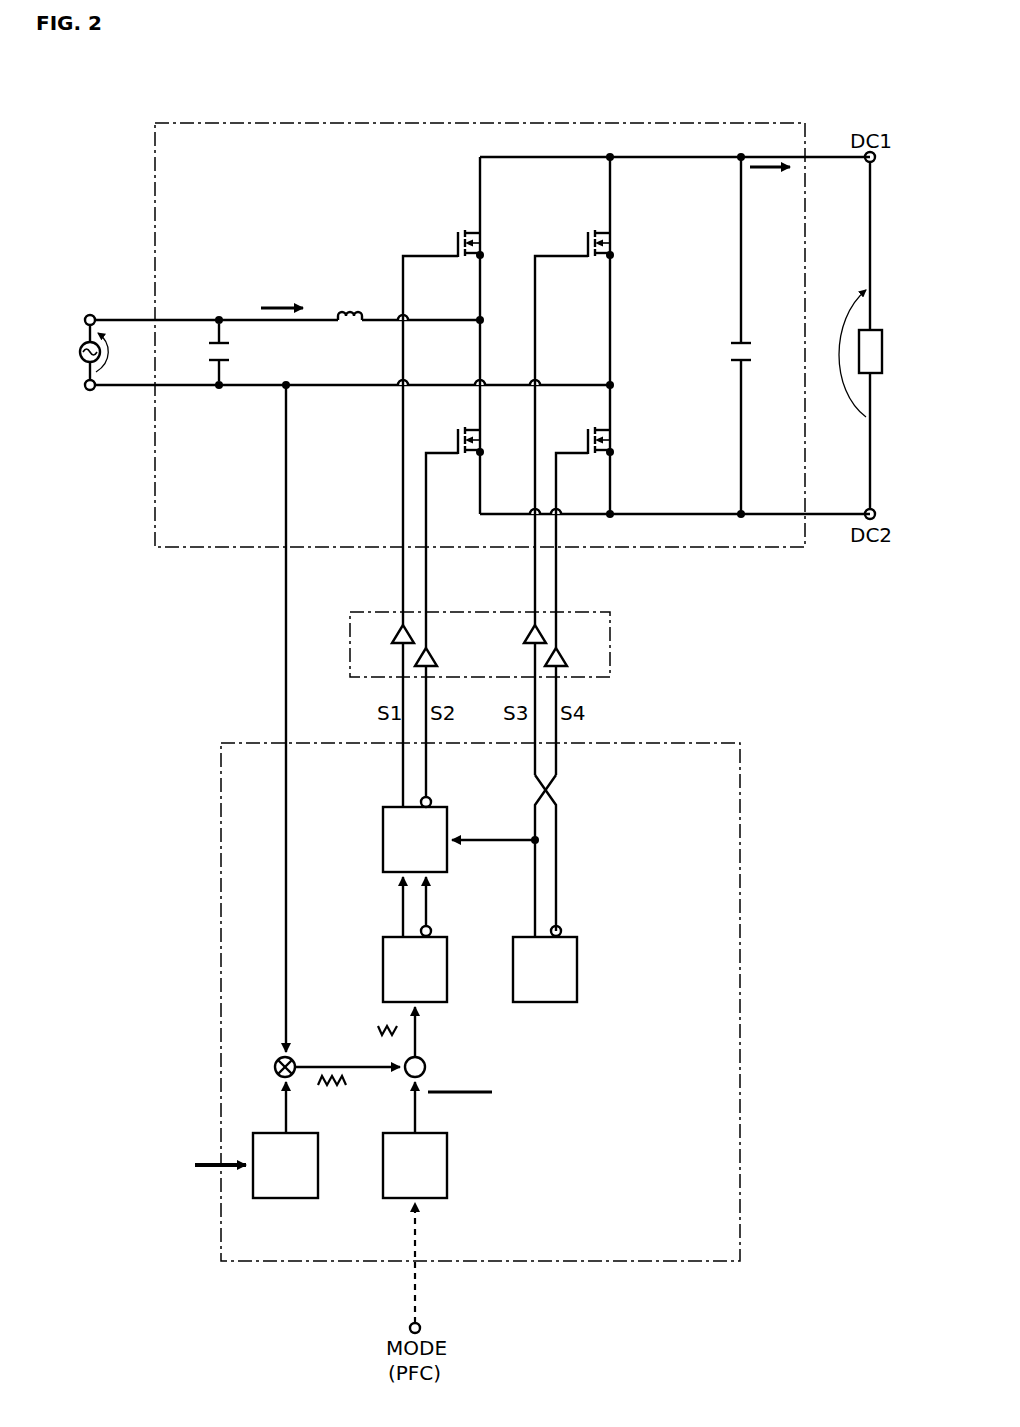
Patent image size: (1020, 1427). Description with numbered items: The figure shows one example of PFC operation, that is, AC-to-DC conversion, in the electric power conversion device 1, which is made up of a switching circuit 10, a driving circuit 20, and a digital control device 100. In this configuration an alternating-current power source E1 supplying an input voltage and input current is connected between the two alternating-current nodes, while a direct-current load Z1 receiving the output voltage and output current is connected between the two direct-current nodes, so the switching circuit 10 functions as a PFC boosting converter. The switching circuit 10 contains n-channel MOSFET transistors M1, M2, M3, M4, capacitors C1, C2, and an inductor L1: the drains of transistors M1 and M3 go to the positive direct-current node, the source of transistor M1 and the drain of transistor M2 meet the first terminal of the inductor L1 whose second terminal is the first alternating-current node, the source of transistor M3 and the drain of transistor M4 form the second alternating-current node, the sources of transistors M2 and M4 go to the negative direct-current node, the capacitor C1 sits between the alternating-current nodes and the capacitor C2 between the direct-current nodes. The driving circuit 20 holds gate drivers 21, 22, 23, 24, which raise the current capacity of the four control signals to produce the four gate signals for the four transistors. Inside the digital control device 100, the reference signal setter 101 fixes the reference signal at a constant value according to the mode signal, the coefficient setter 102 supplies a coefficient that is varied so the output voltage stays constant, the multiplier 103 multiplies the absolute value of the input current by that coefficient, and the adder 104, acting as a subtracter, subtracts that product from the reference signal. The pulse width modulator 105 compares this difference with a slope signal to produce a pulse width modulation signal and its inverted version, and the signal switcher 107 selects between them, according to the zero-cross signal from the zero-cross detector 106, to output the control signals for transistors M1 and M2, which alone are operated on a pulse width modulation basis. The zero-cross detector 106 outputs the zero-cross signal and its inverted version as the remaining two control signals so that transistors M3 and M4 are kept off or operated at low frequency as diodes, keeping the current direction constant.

The electric power conversion device 1 is at (90, 122).
The switching circuit 10 is at (483, 123).
The driving circuit 20 is at (612, 645).
The gate driver 21 is at (397, 637).
The gate driver 22 is at (437, 660).
The gate driver 23 is at (529, 637).
The gate driver 24 is at (567, 660).
The digital control device 100 is at (741, 1003).
The reference signal setter 101 is at (449, 1166).
The coefficient setter 102 is at (320, 1166).
The multiplier 103 is at (295, 1058).
The adder 104 is at (425, 1058).
The pulse width modulator 105 is at (449, 971).
The zero-cross detector 106 is at (579, 971).
The signal switcher 107 is at (384, 841).
The transistor M1 is at (486, 243).
The transistor M2 is at (486, 440).
The transistor M3 is at (616, 243).
The transistor M4 is at (616, 440).
The capacitor C1 is at (229, 352).
The capacitor C2 is at (751, 352).
The inductor L1 is at (349, 309).
The direct-current load Z1 is at (882, 352).
The alternating-current power source E1 is at (82, 352).